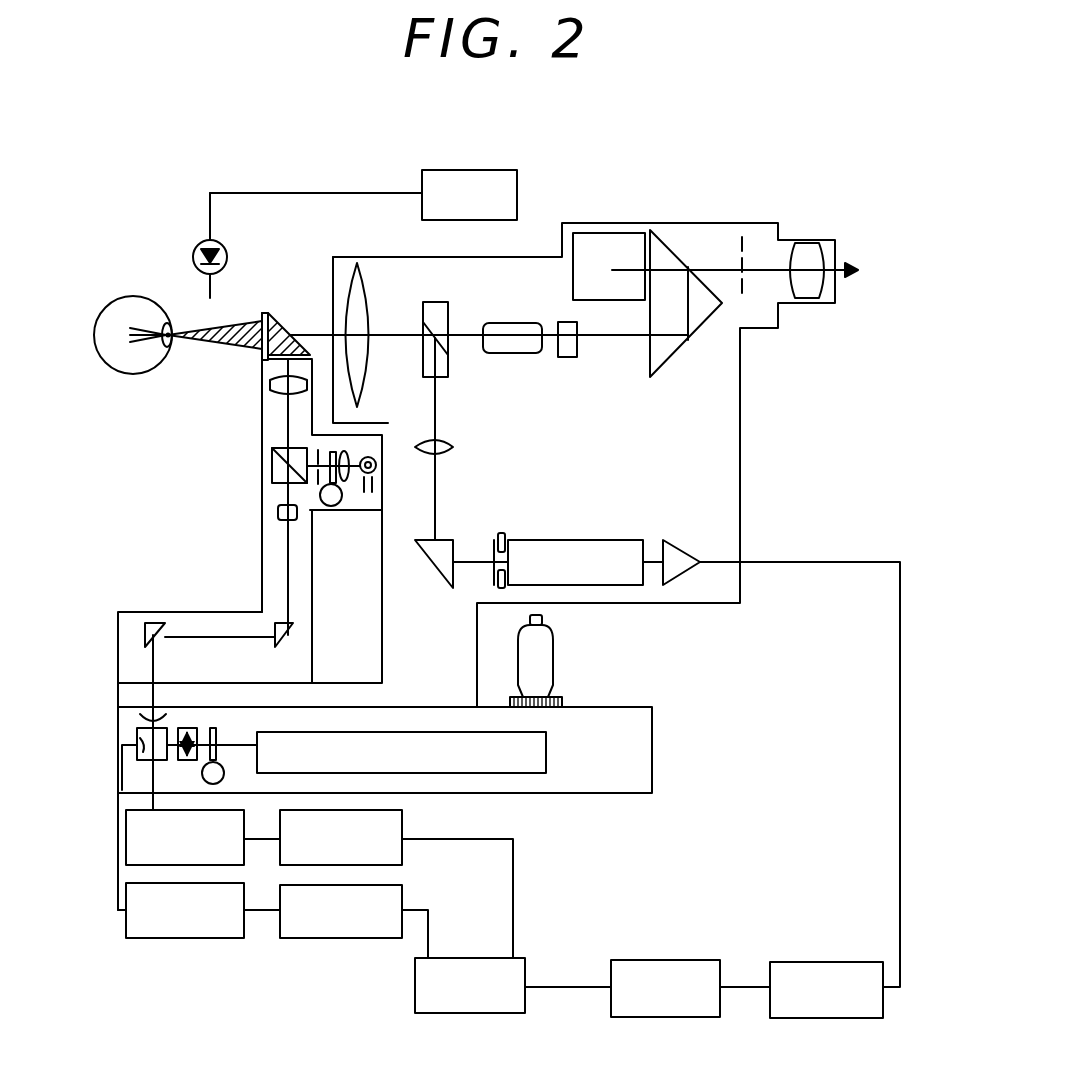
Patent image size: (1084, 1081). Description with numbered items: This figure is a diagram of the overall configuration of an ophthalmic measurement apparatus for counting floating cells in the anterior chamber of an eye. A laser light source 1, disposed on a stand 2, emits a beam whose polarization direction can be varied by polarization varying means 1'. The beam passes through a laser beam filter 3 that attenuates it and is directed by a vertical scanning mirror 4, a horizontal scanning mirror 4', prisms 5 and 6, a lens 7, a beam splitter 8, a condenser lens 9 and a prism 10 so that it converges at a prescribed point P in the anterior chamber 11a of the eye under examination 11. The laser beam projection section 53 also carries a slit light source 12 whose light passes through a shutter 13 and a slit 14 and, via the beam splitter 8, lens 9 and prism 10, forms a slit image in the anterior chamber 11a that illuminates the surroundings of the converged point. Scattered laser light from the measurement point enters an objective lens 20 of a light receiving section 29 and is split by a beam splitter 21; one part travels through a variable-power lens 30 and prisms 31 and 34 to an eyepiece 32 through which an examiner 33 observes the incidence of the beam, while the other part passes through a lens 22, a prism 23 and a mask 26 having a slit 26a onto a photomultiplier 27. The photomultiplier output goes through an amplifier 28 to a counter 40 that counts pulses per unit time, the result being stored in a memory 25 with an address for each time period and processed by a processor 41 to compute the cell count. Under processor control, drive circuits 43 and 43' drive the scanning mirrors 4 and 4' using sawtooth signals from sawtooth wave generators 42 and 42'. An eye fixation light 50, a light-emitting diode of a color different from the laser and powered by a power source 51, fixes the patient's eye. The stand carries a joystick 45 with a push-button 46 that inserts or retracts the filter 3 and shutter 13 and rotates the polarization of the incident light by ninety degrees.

The laser light source 1 is at (414, 751).
The polarization varying means 1' is at (194, 704).
The stand 2 is at (652, 740).
The laser beam filter 3 is at (216, 736).
The vertical scanning mirror 4 is at (176, 734).
The horizontal scanning mirror 4' is at (115, 767).
The prism 5 is at (145, 632).
The prism 6 is at (293, 632).
The lens 7 is at (278, 512).
The beam splitter 8 is at (272, 462).
The condenser lens 9 is at (270, 384).
The prism 10 is at (281, 313).
The eye under examination 11 is at (125, 300).
The anterior chamber 11a is at (170, 346).
The point of laser light P is at (168, 325).
The slit light source 12 is at (366, 480).
The shutter 13 is at (320, 496).
The slit 14 is at (318, 450).
The objective lens 20 is at (370, 292).
The beam splitter 21 is at (448, 366).
The lens 22 is at (449, 445).
The prism 23 is at (442, 542).
The memory 25 is at (688, 960).
The mask 26 is at (505, 536).
The slit 26a is at (492, 552).
The photomultiplier 27 is at (605, 540).
The amplifier 28 is at (681, 540).
The light receiving section 29 is at (688, 220).
The variable-power lens 30 is at (500, 323).
The prism 31 is at (698, 336).
The eyepiece 32 is at (803, 240).
The examiner 33 is at (851, 262).
The prism 34 is at (590, 233).
The counter 40 is at (848, 962).
The processor 41 is at (530, 958).
The sawtooth wave generator 42 is at (396, 875).
The sawtooth wave generator 42' is at (359, 913).
The vertical scanning mirror drive circuit 43 is at (203, 828).
The horizontal scanning mirror drive circuit 43' is at (203, 903).
The joystick 45 is at (545, 667).
The push-button 46 is at (542, 620).
The eye fixation light 50 is at (228, 258).
The power source 51 is at (490, 170).
The laser beam projection section 53 is at (262, 587).